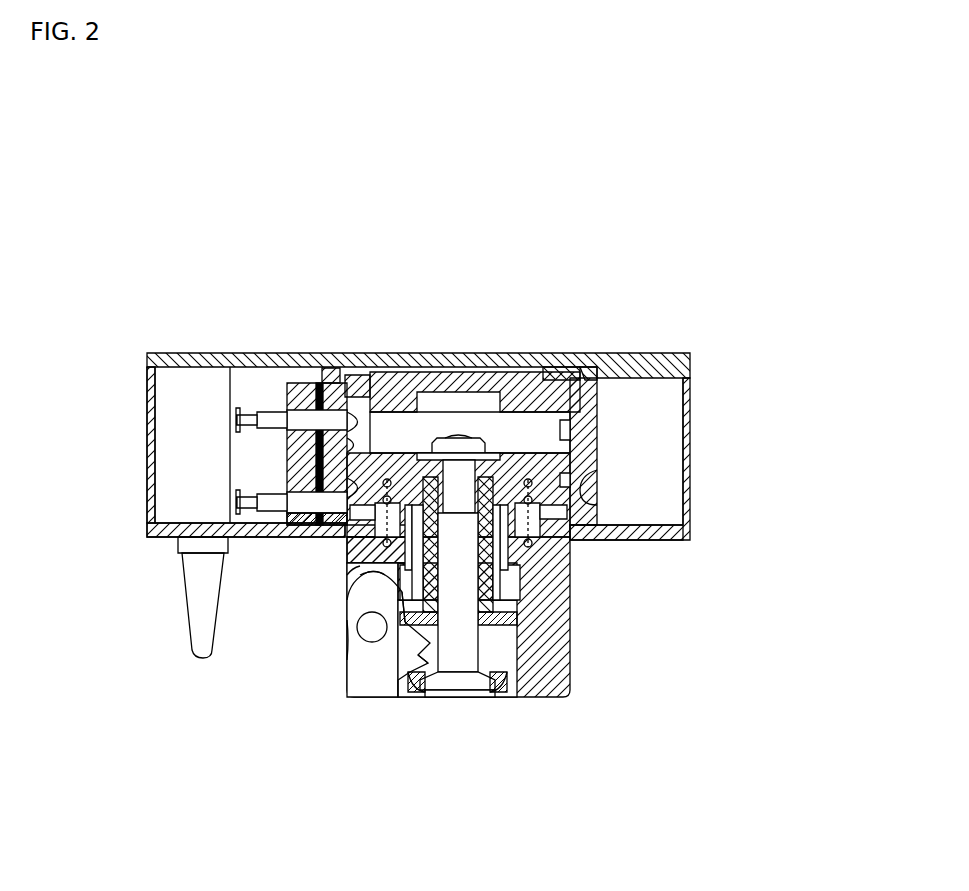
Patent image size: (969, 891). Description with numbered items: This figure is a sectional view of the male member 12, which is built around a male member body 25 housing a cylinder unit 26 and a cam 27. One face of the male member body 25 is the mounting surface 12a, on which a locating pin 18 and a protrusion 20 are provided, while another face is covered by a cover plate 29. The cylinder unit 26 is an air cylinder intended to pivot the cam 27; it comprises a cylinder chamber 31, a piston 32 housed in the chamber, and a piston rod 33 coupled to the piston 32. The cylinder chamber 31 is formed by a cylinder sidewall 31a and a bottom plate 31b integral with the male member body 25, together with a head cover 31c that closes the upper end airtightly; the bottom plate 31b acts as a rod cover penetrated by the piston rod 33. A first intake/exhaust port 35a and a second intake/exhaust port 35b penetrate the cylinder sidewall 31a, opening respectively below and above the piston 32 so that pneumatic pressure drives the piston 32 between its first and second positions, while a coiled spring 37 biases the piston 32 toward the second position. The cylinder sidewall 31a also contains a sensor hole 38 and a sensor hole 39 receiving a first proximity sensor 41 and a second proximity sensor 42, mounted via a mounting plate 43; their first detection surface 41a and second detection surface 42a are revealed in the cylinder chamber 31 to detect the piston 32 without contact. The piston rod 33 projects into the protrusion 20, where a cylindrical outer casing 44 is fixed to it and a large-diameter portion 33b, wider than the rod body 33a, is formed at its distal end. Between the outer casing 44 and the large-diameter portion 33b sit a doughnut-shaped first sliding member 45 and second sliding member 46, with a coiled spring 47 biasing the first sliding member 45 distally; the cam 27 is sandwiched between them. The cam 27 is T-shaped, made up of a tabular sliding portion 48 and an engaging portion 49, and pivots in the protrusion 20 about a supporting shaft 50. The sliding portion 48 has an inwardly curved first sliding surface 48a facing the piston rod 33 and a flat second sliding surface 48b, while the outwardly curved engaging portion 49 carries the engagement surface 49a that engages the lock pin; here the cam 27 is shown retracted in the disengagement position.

The male member 12 is at (634, 352).
The mounting surface 12a is at (658, 541).
The locating pin 18 is at (183, 610).
The protrusion 20 is at (576, 673).
The male member body 25 is at (590, 368).
The cylinder unit 26 is at (523, 364).
The cam 27 is at (355, 655).
The cover plate 29 is at (165, 353).
The cylinder chamber 31 is at (365, 420).
The cylinder sidewall 31a is at (332, 368).
The bottom plate 31b is at (352, 560).
The head cover 31c is at (440, 385).
The piston 32 is at (390, 445).
The piston rod 33 is at (492, 648).
The rod body 33a is at (482, 660).
The large-diameter portion 33b is at (460, 697).
The first intake/exhaust port 35a is at (592, 492).
The second intake/exhaust port 35b is at (597, 405).
The coiled spring 37 is at (532, 520).
The sensor hole 38 is at (340, 528).
The sensor hole 39 is at (320, 395).
The first proximity sensor 41 is at (272, 515).
The first detection surface 41a is at (355, 490).
The second proximity sensor 42 is at (272, 412).
The second detection surface 42a is at (350, 423).
The mounting plate 43 is at (355, 443).
The outer casing 44 is at (493, 565).
The first sliding member 45 is at (517, 620).
The second sliding member 46 is at (428, 693).
The coiled spring 47 is at (493, 592).
The sliding portion 48 is at (382, 660).
The first sliding surface 48a is at (405, 597).
The second sliding surface 48b is at (425, 650).
The engaging portion 49 is at (352, 640).
The engagement surface 49a is at (362, 598).
The supporting shaft 50 is at (375, 640).